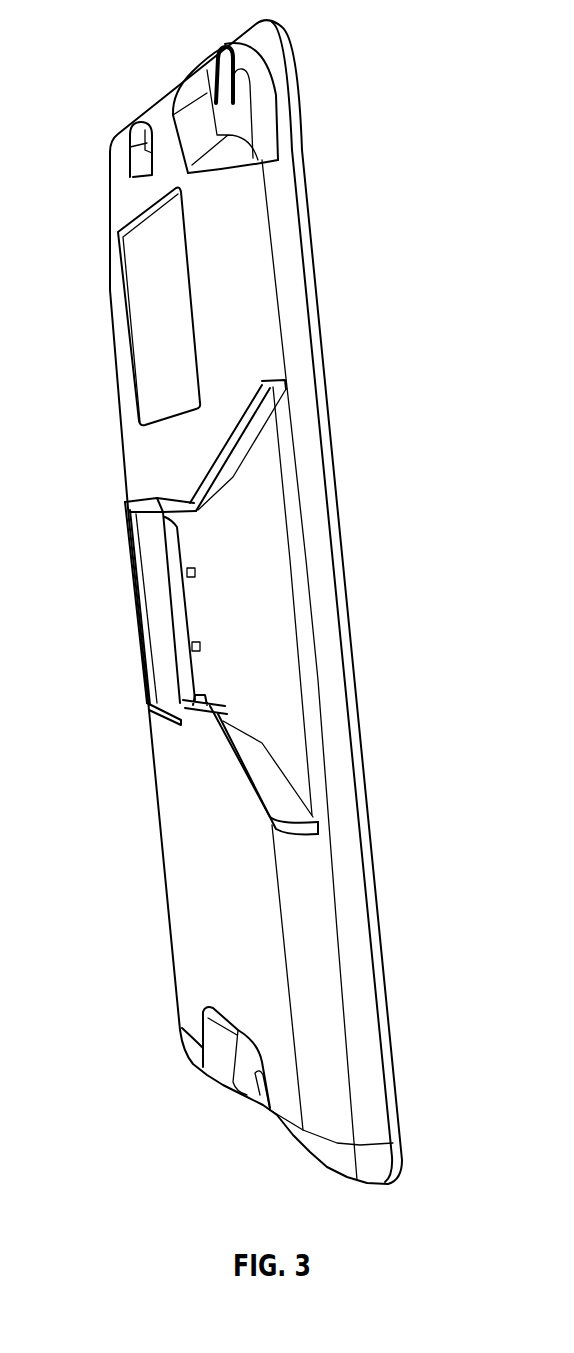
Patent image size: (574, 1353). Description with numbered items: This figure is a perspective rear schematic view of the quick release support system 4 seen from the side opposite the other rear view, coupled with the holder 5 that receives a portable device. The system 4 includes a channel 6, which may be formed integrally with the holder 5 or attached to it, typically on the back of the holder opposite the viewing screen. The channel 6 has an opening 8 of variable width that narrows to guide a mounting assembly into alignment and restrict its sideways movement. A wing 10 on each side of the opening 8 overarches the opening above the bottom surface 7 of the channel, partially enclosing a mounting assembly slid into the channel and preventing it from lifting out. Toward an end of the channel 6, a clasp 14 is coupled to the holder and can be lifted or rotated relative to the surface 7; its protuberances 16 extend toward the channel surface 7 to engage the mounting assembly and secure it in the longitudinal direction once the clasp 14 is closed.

The quick release support system 4 is at (319, 304).
The holder 5 is at (296, 360).
The channel 6 is at (267, 583).
The bottom surface of the channel 7 is at (223, 523).
The opening 8 is at (272, 795).
The wing 10 is at (226, 712).
The clasp 14 is at (148, 605).
The protuberances 16 is at (190, 645).